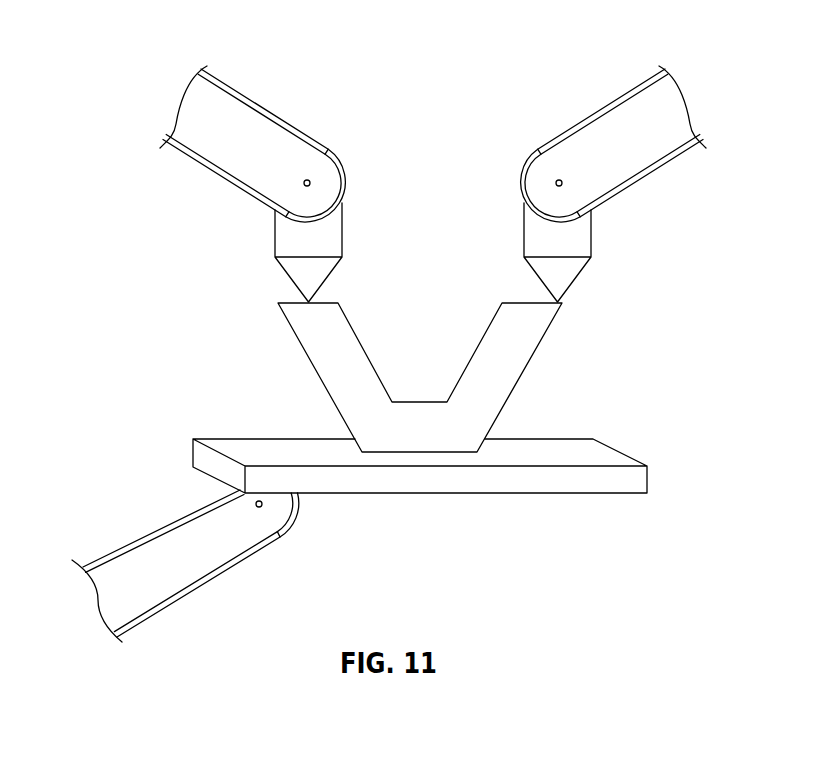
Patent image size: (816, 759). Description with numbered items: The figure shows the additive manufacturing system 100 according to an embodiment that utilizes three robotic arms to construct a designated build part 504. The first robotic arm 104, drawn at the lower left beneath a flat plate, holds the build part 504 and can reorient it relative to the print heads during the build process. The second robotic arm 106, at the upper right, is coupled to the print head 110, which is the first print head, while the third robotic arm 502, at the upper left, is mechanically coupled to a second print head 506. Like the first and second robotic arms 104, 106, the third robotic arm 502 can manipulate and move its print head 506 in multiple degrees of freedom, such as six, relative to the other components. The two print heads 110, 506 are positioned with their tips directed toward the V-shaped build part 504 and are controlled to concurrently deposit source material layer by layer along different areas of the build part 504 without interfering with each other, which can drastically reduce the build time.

The additive manufacturing system 100 is at (105, 228).
The third robotic arm 502 is at (268, 150).
The second robotic arm 106 is at (625, 160).
The first robotic arm 104 is at (167, 547).
The second print head 506 is at (307, 279).
The print head 110 is at (560, 279).
The build part 504 is at (333, 368).